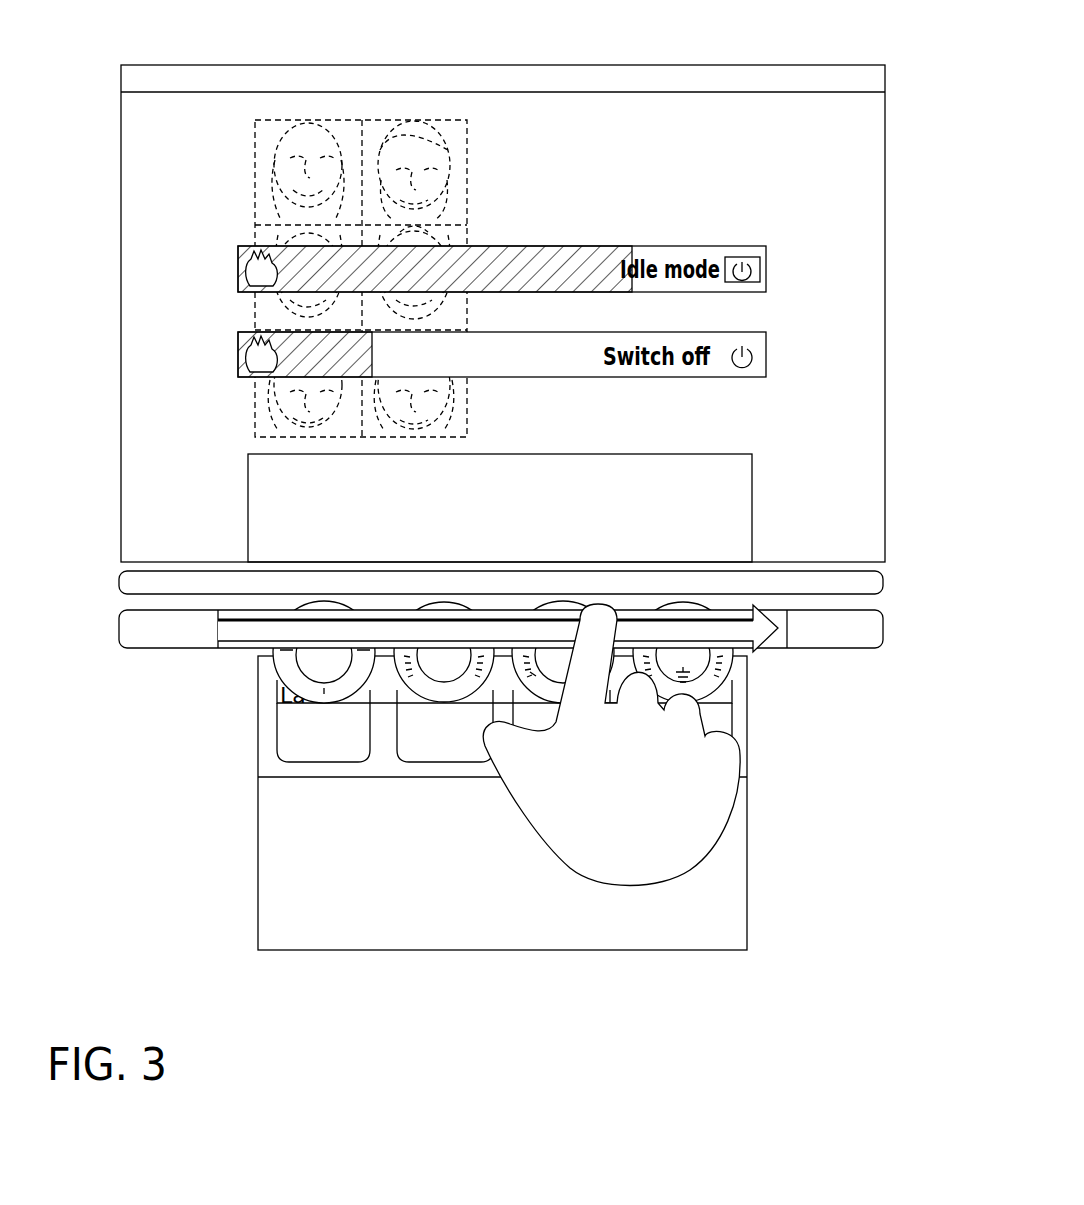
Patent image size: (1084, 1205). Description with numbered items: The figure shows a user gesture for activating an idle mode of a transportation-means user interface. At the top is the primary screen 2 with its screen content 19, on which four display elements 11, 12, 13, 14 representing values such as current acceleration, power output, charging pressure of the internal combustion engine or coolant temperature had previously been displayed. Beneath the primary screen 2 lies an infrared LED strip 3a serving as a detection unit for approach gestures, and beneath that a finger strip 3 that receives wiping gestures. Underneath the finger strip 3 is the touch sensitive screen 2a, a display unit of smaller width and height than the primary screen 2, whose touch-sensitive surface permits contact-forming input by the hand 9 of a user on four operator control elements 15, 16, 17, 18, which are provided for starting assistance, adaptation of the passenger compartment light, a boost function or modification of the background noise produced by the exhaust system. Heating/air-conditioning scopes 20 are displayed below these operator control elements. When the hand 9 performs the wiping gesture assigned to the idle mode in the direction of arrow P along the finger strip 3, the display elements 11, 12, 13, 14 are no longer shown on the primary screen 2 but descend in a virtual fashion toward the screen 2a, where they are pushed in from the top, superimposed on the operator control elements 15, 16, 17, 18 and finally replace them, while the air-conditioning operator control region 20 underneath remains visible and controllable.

The primary screen 2 is at (885, 150).
The touch sensitive screen 2a is at (745, 908).
The finger strip 3 is at (883, 630).
The infrared LED strip 3a is at (883, 584).
The hand 9 is at (611, 745).
The display element 11 is at (308, 675).
The display element 12 is at (425, 675).
The display element 13 is at (543, 732).
The display element 14 is at (697, 677).
The operator control element 15 is at (278, 755).
The operator control element 16 is at (419, 762).
The operator control element 17 is at (545, 677).
The operator control element 18 is at (728, 730).
The screen content 19 is at (543, 107).
The heating/air-conditioning scopes 20 is at (463, 932).
The arrow P is at (730, 630).